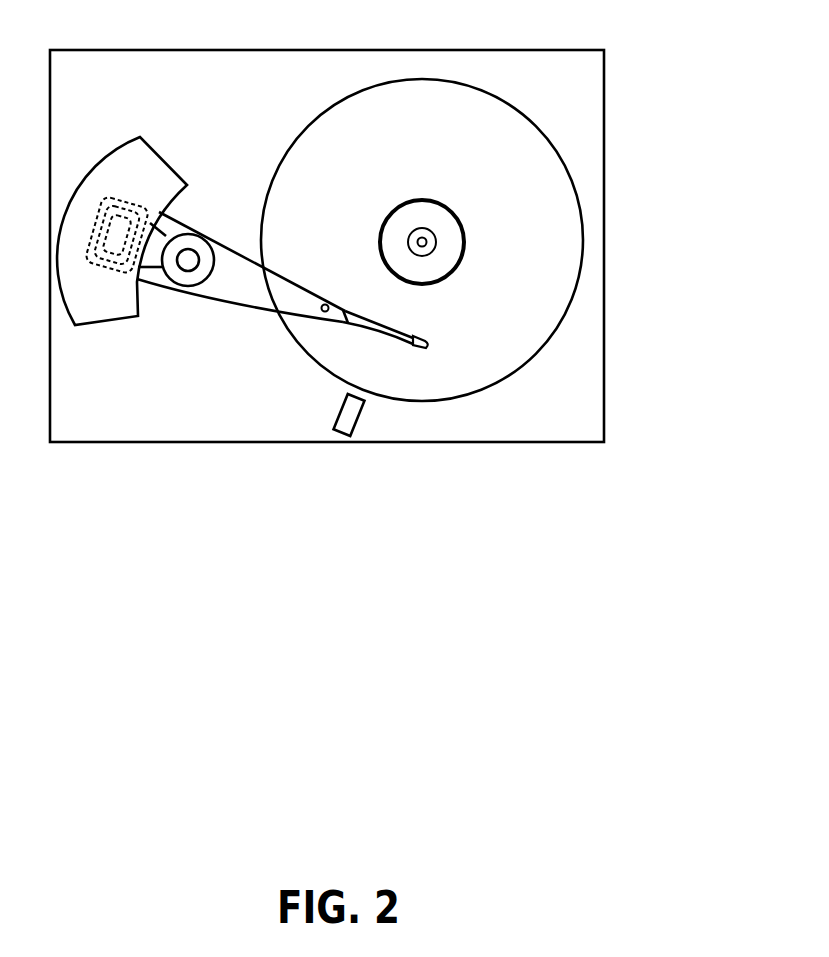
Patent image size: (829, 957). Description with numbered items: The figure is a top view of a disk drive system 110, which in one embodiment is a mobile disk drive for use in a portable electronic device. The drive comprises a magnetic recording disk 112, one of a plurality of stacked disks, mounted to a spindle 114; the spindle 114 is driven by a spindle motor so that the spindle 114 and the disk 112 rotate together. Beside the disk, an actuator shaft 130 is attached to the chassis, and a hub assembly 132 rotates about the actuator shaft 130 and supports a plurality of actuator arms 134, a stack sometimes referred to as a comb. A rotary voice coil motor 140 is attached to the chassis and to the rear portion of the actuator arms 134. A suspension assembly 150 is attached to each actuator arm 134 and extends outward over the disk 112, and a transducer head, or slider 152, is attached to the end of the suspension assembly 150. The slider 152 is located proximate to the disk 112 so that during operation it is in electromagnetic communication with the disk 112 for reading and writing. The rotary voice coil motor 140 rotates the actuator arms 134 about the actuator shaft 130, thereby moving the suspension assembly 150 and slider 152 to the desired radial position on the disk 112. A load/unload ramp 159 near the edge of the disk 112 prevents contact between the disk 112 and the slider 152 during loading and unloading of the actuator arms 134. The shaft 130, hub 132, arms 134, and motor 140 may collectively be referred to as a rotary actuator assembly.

The disk drive system 110 is at (630, 140).
The magnetic recording disk 112 is at (446, 137).
The spindle 114 is at (425, 228).
The actuator shaft 130 is at (180, 270).
The hub assembly 132 is at (205, 243).
The actuator arm 134 is at (290, 295).
The rotary voice coil motor 140 is at (140, 170).
The suspension assembly 150 is at (358, 326).
The slider 152 is at (427, 346).
The load/unload ramp 159 is at (348, 420).